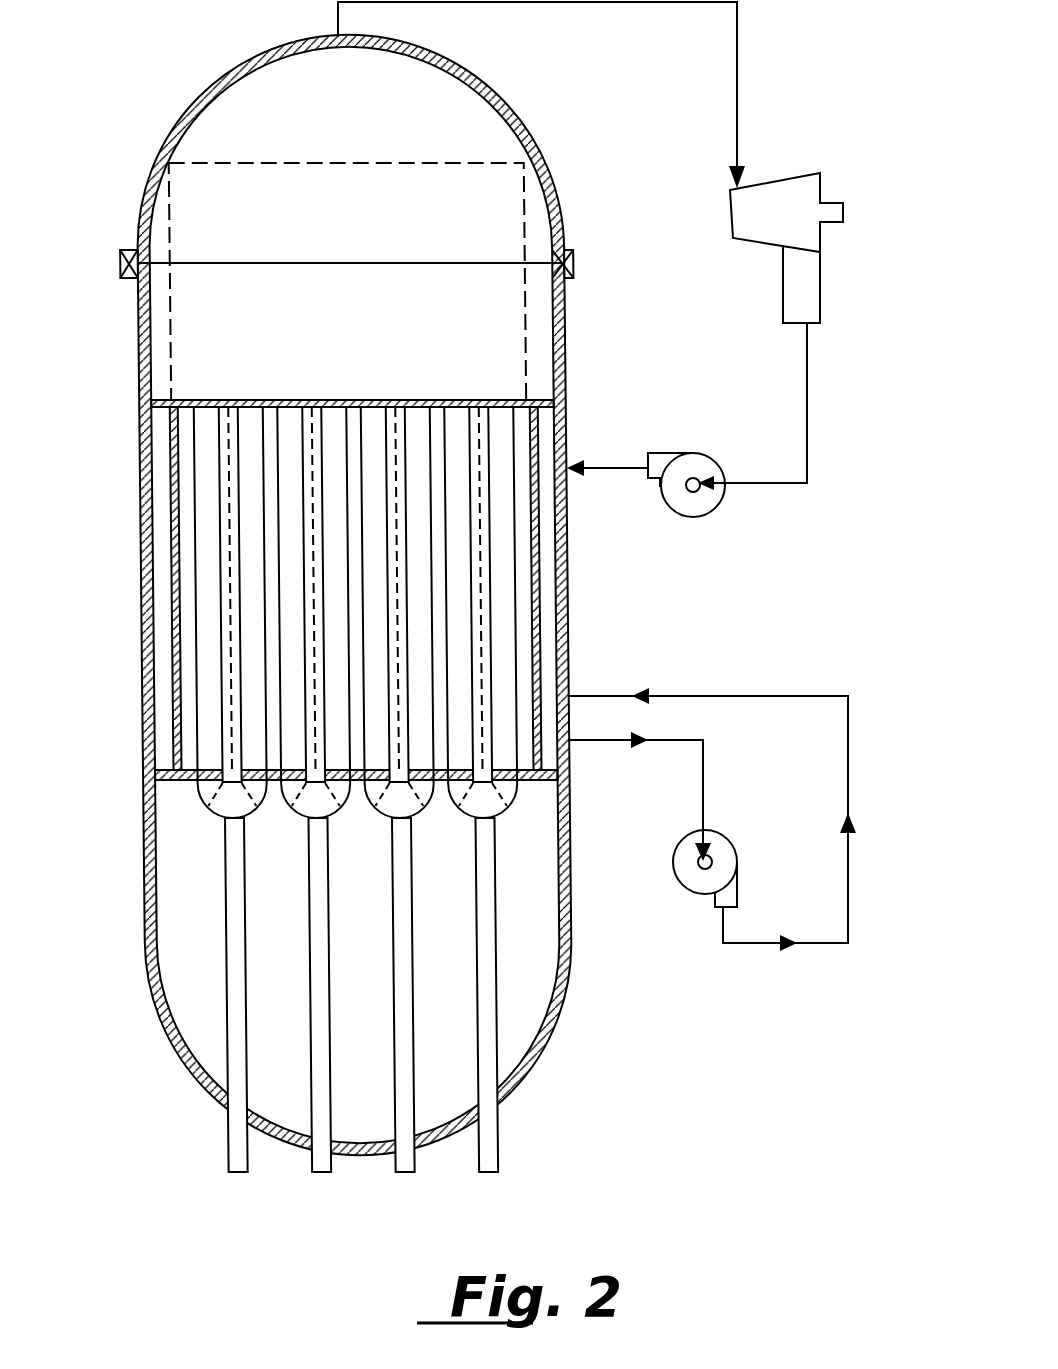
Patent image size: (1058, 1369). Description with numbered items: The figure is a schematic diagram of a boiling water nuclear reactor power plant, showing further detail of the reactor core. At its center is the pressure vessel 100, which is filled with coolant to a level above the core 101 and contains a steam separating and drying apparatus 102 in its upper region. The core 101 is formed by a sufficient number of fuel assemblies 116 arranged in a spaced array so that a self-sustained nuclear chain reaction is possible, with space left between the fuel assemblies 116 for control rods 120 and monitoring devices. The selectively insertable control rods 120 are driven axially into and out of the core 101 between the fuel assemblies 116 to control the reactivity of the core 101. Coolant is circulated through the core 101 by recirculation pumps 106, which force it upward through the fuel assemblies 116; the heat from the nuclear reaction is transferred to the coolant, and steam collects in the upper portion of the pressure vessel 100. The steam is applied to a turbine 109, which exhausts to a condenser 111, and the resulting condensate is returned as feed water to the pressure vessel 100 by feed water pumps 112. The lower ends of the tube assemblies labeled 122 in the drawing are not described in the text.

The pressure vessel 100 is at (553, 1035).
The core 101 is at (540, 667).
The steam separating and drying apparatus 102 is at (527, 196).
The recirculation pumps 106 is at (690, 877).
The turbine 109 is at (780, 183).
The condenser 111 is at (815, 300).
The feed water pumps 112 is at (690, 458).
The fuel assemblies 116 is at (193, 537).
The control rods 120 is at (221, 935).
The bayonet tube assemblies 122 is at (201, 798).